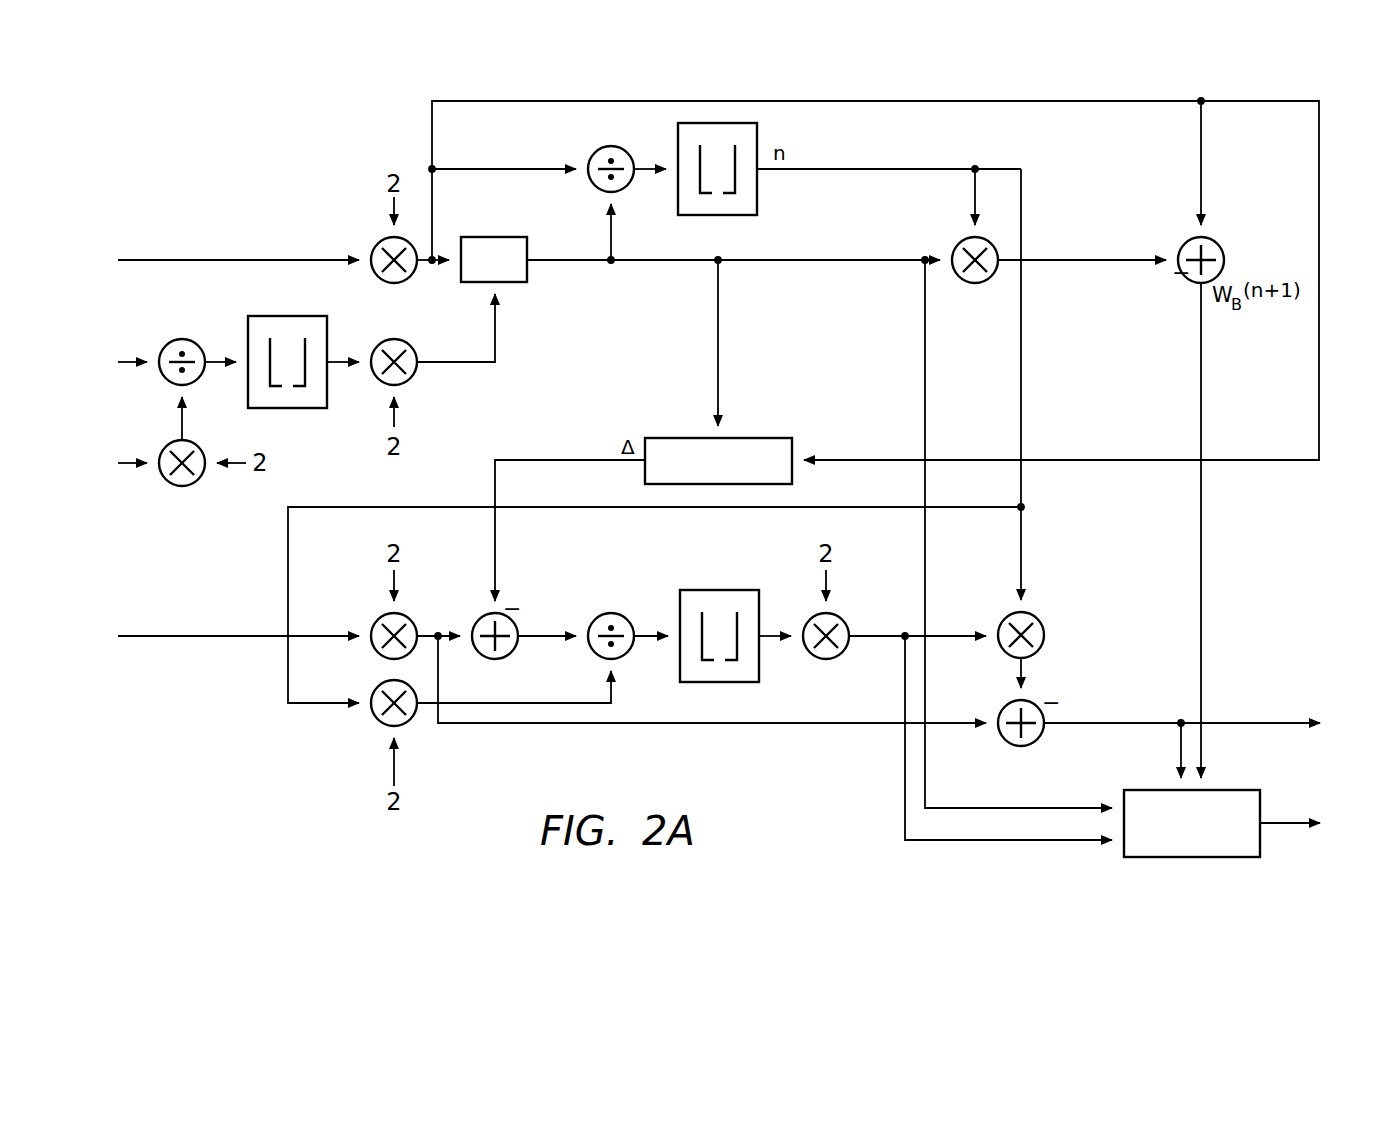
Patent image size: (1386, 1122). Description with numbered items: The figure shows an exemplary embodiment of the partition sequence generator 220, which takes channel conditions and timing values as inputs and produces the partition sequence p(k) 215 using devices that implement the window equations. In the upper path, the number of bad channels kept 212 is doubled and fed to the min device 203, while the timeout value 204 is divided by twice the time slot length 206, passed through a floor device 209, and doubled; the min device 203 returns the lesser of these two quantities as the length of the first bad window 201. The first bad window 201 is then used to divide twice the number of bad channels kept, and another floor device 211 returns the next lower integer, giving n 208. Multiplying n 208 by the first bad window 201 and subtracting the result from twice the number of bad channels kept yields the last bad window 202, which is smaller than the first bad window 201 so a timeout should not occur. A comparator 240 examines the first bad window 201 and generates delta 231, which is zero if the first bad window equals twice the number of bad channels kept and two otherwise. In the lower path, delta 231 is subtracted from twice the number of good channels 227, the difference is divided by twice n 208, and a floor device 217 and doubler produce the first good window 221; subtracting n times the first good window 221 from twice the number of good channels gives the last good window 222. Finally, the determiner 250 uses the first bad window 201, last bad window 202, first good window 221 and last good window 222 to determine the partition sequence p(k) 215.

The partition sequence generator 220 is at (262, 163).
The number of bad channels kept 212 is at (242, 260).
The min device 203 is at (479, 237).
The first bad window 201 is at (574, 263).
The floor device 211 is at (757, 190).
The n 208 is at (846, 168).
The last bad window 202 is at (1202, 378).
The timeout value 204 is at (131, 362).
The time slot length 206 is at (131, 463).
The floor device 209 is at (297, 408).
The comparator 240 is at (752, 438).
The delta 231 is at (562, 460).
The number of good channels 227 is at (131, 636).
The floor device 217 is at (712, 590).
The first good window 221 is at (878, 639).
The last good window 222 is at (1122, 726).
The partition sequence p(k) 215 is at (1283, 825).
The determiner 250 is at (1192, 858).